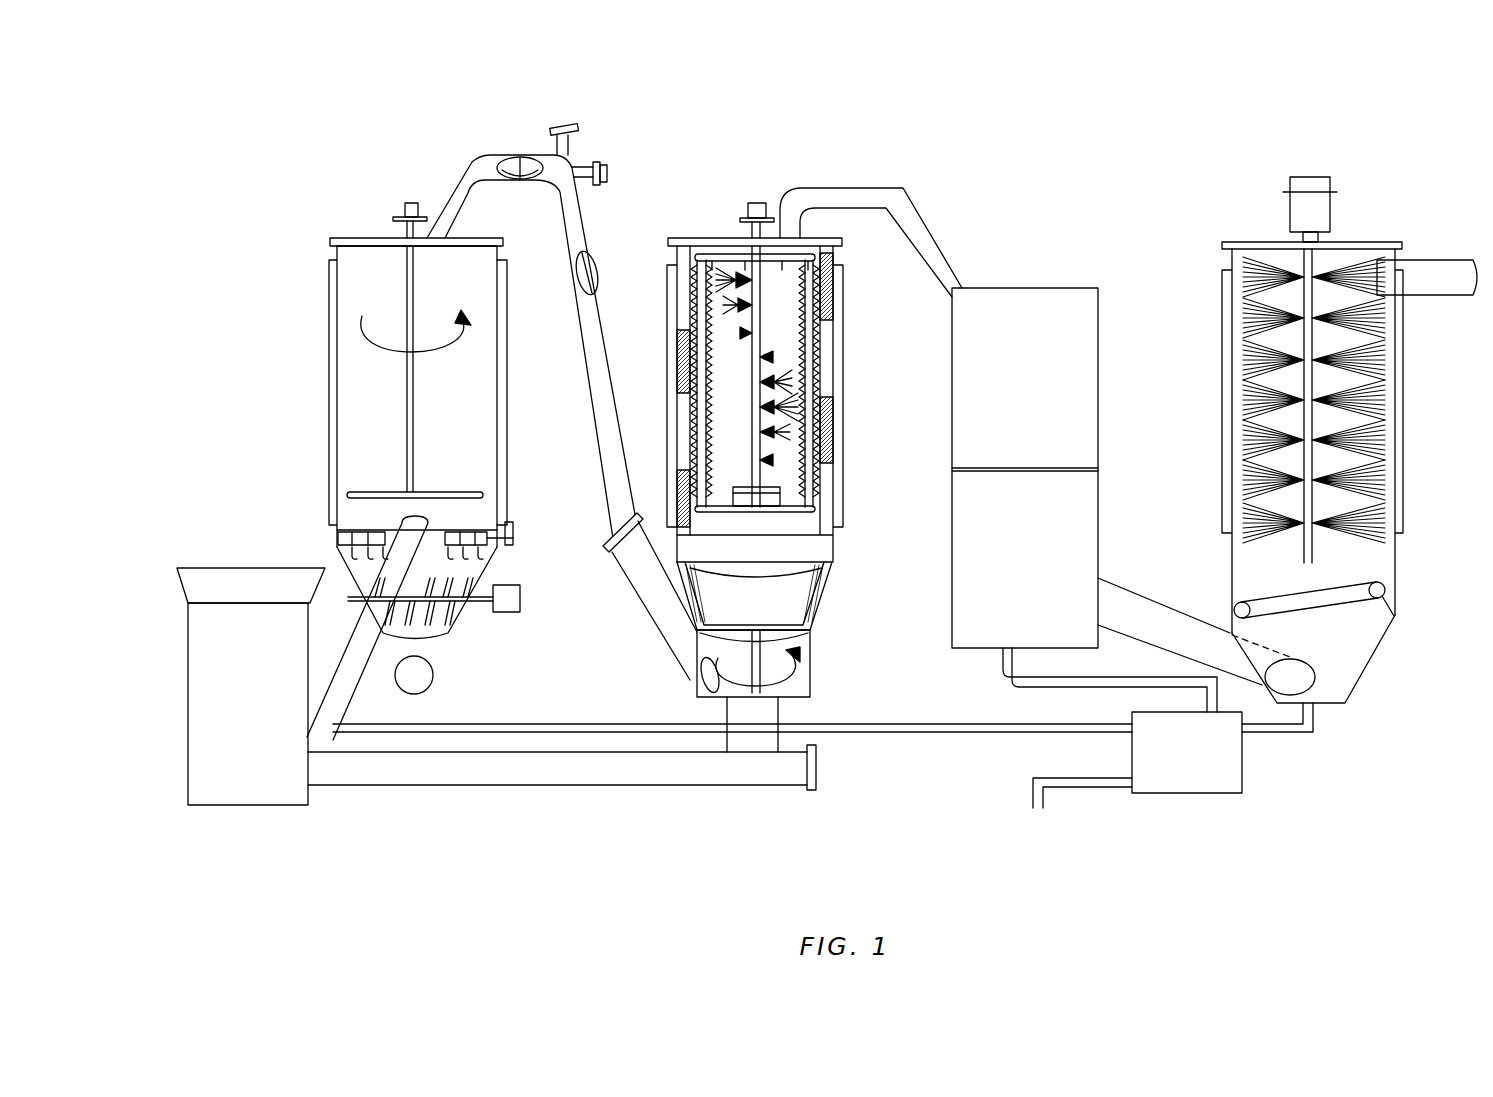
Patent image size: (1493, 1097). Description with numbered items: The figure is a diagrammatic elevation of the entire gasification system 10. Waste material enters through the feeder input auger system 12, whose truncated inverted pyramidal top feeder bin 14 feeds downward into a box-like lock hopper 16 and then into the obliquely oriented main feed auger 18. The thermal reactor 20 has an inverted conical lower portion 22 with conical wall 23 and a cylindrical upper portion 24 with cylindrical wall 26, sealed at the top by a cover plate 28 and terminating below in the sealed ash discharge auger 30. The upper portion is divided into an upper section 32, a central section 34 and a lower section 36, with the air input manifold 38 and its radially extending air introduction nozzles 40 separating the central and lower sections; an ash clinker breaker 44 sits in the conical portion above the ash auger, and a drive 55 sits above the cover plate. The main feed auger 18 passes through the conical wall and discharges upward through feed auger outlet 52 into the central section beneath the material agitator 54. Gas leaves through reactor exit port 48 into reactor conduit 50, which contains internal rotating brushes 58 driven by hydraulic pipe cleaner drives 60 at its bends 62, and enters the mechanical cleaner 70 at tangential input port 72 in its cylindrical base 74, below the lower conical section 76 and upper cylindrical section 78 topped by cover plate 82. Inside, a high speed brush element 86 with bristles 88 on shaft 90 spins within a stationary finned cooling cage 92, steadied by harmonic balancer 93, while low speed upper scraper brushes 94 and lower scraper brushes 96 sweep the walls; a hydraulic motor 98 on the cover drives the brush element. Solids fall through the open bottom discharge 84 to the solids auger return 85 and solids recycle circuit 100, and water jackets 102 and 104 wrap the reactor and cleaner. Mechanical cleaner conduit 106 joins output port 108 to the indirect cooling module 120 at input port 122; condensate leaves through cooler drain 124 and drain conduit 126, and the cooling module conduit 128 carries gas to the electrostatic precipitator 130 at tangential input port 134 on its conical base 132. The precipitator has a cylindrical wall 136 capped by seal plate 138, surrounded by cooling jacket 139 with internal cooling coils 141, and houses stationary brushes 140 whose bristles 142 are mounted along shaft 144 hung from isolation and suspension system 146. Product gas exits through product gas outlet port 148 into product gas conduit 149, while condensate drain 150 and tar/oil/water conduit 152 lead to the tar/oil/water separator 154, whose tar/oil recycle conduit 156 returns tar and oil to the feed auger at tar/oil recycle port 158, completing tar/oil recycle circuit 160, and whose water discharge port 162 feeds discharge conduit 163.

The gasification system 10 is at (633, 828).
The feeder input auger system 12 is at (219, 686).
The top feeder bin 14 is at (229, 600).
The lock hopper 16 is at (229, 721).
The main feed auger 18 is at (345, 684).
The thermal reactor 20 is at (403, 435).
The lower portion 22 is at (437, 632).
The conical wall 23 is at (492, 576).
The upper portion 24 is at (498, 455).
The cylindrical wall 26 is at (508, 413).
The cover plate 28 is at (487, 238).
The ash discharge auger 30 is at (432, 678).
The upper section 32 is at (432, 422).
The central section 34 is at (433, 478).
The lower section 36 is at (424, 580).
The air input manifold 38 is at (338, 538).
The air introduction nozzles 40 is at (472, 530).
The ash clinker breaker 44 is at (351, 601).
The reactor exit port 48 is at (440, 248).
The reactor conduit 50 is at (587, 368).
The feed auger outlet 52 is at (408, 522).
The material agitator 54 is at (388, 492).
The drive motor 55 is at (408, 200).
The internal rotating brushes 58 is at (520, 157).
The hydraulic pipe cleaner drives 60 is at (567, 152).
The bends 62 is at (562, 399).
The mechanical cleaner 70 is at (764, 455).
The tangential input port 72 is at (702, 680).
The cylindrical base 74 is at (810, 680).
The lower conical section 76 is at (828, 600).
The upper cylindrical section 78 is at (835, 548).
The cover plate 82 is at (722, 238).
The bottom discharge 84 is at (790, 712).
The solids auger return 85 is at (580, 786).
The brush element 86 is at (765, 335).
The bristles 88 is at (770, 404).
The shaft 90 is at (760, 432).
The finned cooling cage 92 is at (710, 471).
The harmonic balancer 93 is at (766, 496).
The upper scraper brushes 94 is at (845, 437).
The lower scraper brushes 96 is at (705, 617).
The hydraulic motor 98 is at (757, 202).
The solids recycle circuit 100 is at (748, 786).
The heat dissipating water jacket 102 is at (329, 433).
The heat dissipating water jacket 104 is at (670, 447).
The mechanical cleaner conduit 106 is at (850, 188).
The output port 108 is at (806, 220).
The indirect cooling module 120 is at (1003, 393).
The input port 122 is at (988, 288).
The cooler drain 124 is at (1007, 648).
The drain conduit 126 is at (1003, 672).
The cooling module conduit 128 is at (1098, 600).
The electrostatic precipitator 130 is at (1392, 582).
The conical base 132 is at (1373, 660).
The tangential input port 134 is at (1296, 660).
The cylindrical wall 136 is at (1395, 610).
The seal plate 138 is at (1351, 439).
The cooling jacket 139 is at (1403, 378).
The stationary brushes 140 is at (1250, 604).
The internal cooling coils 141 is at (1397, 622).
The bristles 142 is at (1280, 535).
The shaft 144 is at (1370, 590).
The isolation and suspension system 146 is at (1330, 215).
The product gas outlet port 148 is at (1383, 282).
The product gas conduit 149 is at (1420, 264).
The condensate drain 150 is at (1318, 710).
The tar/oil/water conduit 152 is at (1280, 733).
The tar/oil/water separator 154 is at (1169, 759).
The tar/oil recycle conduit 156 is at (960, 733).
The tar/oil recycle port 158 is at (345, 724).
The tar/oil recycle circuit 160 is at (518, 724).
The water discharge port 162 is at (1120, 790).
The discharge conduit 163 is at (1098, 777).